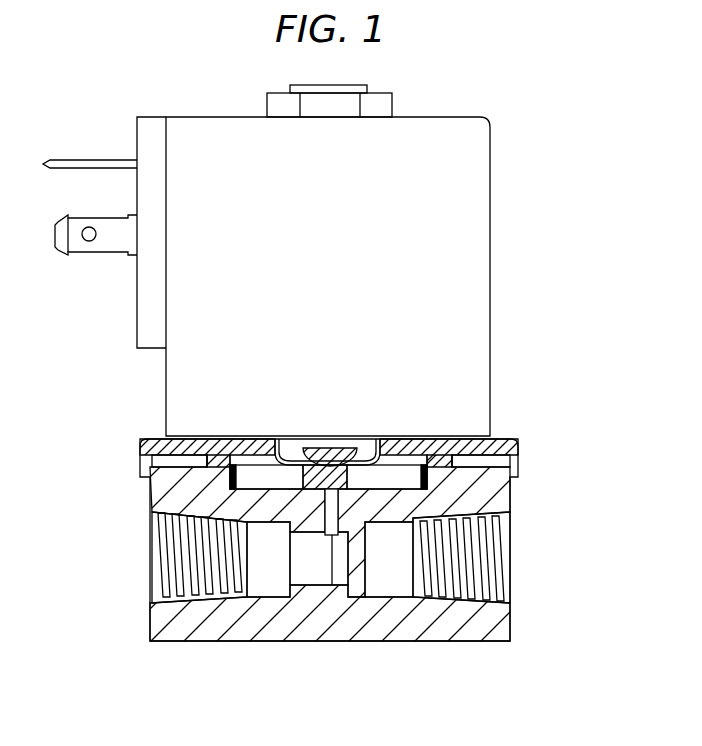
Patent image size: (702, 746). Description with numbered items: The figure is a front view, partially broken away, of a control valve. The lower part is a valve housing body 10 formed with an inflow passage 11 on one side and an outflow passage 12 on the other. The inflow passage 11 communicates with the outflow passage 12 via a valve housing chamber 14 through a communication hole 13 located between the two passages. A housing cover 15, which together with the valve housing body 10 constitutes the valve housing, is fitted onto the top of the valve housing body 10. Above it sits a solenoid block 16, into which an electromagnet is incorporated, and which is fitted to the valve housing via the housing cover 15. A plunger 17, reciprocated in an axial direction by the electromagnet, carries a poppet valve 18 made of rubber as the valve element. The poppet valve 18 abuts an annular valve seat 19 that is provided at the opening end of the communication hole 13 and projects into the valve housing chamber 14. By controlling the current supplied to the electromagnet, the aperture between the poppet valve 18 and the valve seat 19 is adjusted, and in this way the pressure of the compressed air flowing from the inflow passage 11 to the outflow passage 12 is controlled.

The valve housing body 10 is at (460, 630).
The inflow passage 11 is at (152, 594).
The outflow passage 12 is at (503, 595).
The communication hole 13 is at (333, 565).
The valve housing chamber 14 is at (376, 488).
The housing cover 15 is at (517, 443).
The solenoid block 16 is at (480, 273).
The plunger 17 is at (338, 490).
The poppet valve 18 is at (290, 500).
The valve seat 19 is at (315, 505).